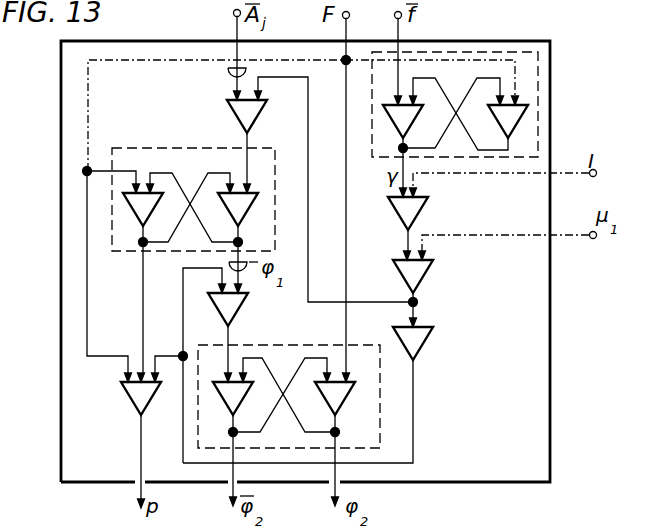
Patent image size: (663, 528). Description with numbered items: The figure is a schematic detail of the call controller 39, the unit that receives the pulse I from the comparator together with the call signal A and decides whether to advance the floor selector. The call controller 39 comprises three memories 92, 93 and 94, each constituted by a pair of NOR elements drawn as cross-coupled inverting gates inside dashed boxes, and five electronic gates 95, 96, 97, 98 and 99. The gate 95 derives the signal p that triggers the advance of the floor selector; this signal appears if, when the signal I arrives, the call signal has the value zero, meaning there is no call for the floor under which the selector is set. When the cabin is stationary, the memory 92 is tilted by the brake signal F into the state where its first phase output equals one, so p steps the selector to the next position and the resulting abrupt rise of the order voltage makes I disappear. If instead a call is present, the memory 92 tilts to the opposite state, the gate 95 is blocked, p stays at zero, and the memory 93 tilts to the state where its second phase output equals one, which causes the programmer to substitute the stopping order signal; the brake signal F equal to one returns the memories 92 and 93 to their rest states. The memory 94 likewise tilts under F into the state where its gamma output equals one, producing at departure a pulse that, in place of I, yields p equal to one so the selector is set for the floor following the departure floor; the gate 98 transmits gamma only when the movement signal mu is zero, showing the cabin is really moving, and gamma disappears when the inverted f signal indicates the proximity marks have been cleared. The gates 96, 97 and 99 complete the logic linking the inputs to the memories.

The call controller 39 is at (550, 285).
The memory 92 is at (112, 252).
The memory 93 is at (312, 345).
The memory 94 is at (372, 158).
The electronic gate 95 is at (125, 392).
The electronic gate 96 is at (238, 112).
The electronic gate 97 is at (400, 207).
The electronic gate 98 is at (405, 270).
The electronic gate 99 is at (240, 303).